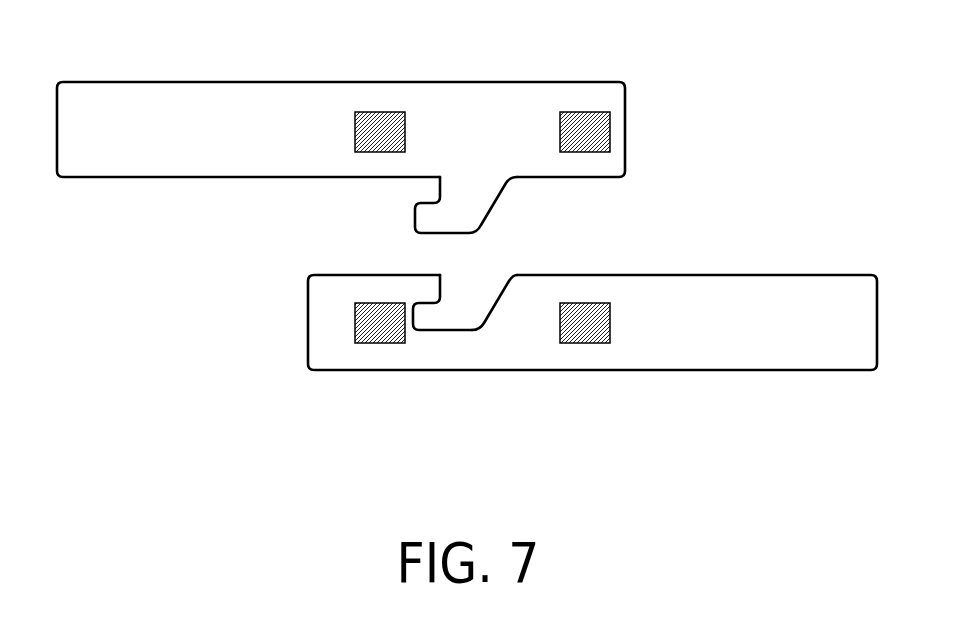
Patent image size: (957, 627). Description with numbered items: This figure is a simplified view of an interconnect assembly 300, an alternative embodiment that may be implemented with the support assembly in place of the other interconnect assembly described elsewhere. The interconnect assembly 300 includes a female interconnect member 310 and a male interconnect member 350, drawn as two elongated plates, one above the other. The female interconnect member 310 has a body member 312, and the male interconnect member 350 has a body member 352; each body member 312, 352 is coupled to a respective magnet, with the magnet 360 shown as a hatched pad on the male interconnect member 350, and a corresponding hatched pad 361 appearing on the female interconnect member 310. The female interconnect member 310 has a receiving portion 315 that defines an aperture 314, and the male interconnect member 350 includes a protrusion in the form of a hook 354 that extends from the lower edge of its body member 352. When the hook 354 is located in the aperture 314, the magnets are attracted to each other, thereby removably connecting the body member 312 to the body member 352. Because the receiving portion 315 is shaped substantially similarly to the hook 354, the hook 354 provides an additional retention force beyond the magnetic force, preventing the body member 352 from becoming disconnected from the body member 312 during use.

The interconnect assembly 300 is at (143, 304).
The female interconnect member 310 is at (725, 409).
The body member 312 is at (814, 296).
The aperture 314 is at (464, 308).
The receiving portion 315 is at (419, 319).
The male interconnect member 350 is at (705, 81).
The body member 352 is at (244, 100).
The hook 354 is at (509, 204).
The magnet 360 is at (583, 109).
The weld pad 361 is at (580, 350).